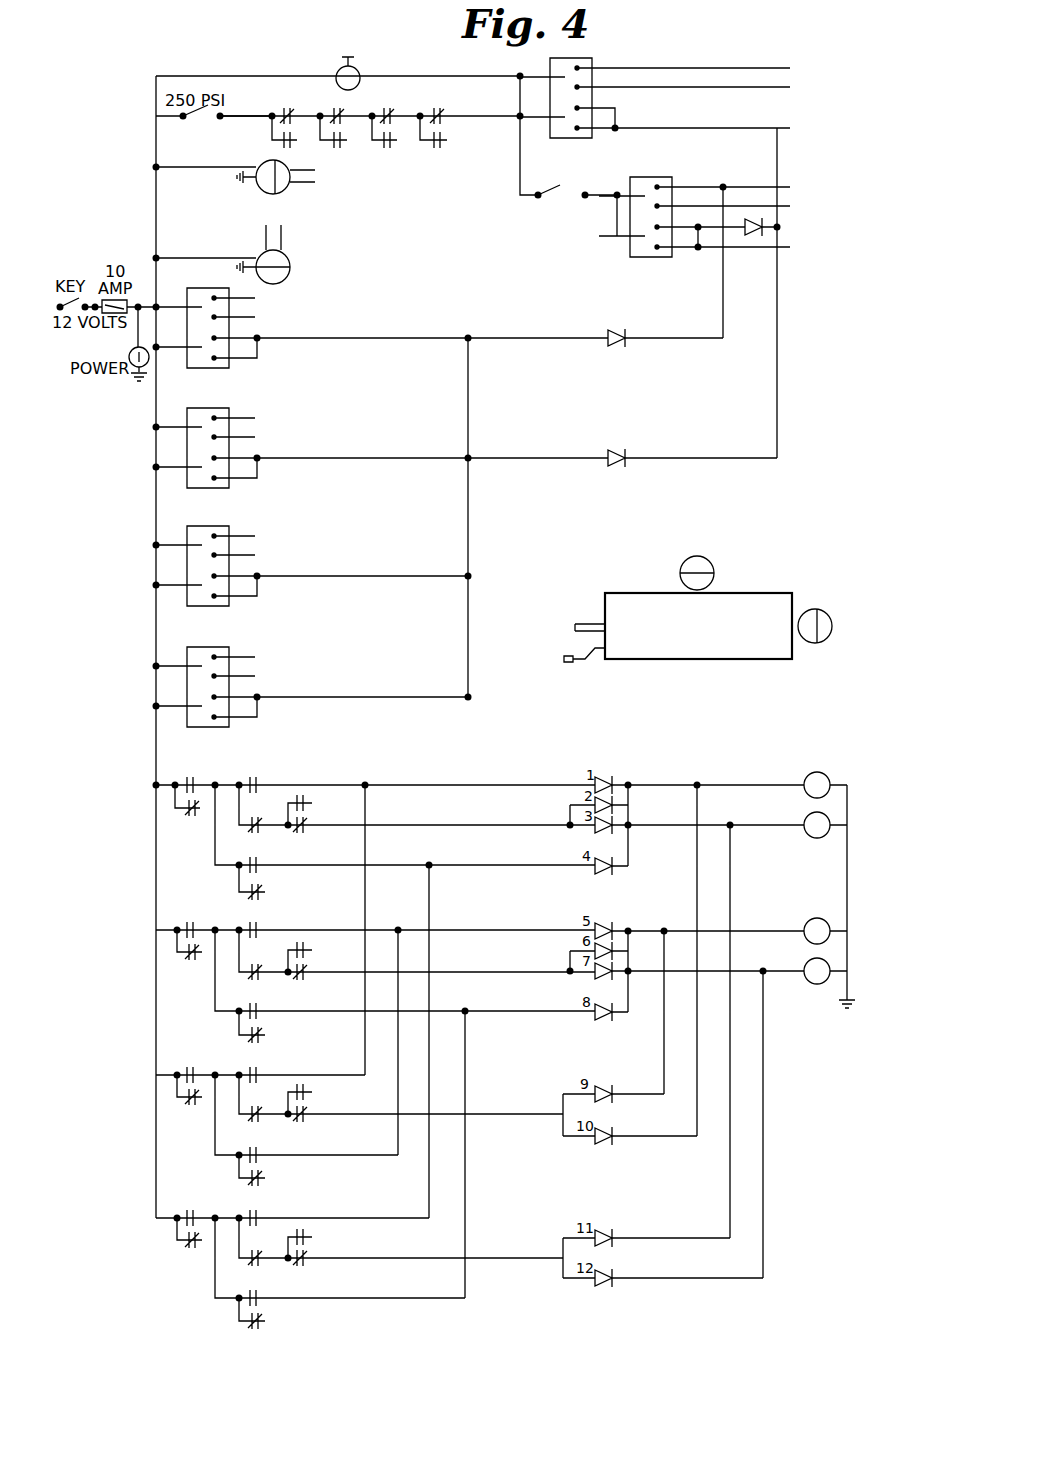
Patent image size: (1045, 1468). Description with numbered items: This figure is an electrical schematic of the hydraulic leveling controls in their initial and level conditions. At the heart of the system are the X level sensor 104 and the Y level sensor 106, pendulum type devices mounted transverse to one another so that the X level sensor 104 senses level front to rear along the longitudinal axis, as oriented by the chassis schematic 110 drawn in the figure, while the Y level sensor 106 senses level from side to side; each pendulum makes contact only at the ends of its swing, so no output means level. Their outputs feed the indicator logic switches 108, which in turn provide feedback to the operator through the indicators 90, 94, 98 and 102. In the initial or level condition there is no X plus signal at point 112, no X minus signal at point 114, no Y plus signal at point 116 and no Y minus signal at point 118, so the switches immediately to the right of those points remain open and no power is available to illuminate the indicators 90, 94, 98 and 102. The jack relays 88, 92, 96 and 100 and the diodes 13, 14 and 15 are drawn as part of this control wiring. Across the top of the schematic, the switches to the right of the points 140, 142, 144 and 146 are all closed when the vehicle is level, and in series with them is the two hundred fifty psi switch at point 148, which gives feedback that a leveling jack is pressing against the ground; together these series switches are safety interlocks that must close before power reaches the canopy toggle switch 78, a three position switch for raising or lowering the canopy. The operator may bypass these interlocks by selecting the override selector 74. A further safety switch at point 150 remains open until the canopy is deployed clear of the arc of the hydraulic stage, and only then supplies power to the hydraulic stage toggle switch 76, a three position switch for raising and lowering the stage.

The override selector 74 is at (338, 74).
The hydraulic stage toggle switch 76 is at (754, 236).
The canopy toggle switch 78 is at (578, 138).
The jack 1 relay 88 is at (218, 368).
The jack 2 relay 92 is at (218, 488).
The jack 3 relay 96 is at (218, 607).
The jack 4 relay 100 is at (218, 728).
The indicator 90 is at (827, 941).
The indicator 94 is at (827, 796).
The indicator 98 is at (827, 836).
The indicator 102 is at (815, 985).
The X level sensor 104 is at (290, 262).
The Y level sensor 106 is at (288, 188).
The indicator logic switches 108 is at (338, 1047).
The chassis schematic 110 is at (686, 659).
The X plus signal point 112 is at (156, 784).
The X minus signal point 114 is at (158, 928).
The Y plus signal point 116 is at (175, 1075).
The Y minus signal point 118 is at (342, 1254).
The safety interlock switch point 140 is at (255, 110).
The safety interlock switch point 142 is at (335, 118).
The safety interlock switch point 144 is at (385, 118).
The safety interlock switch point 146 is at (435, 118).
The 250 psi switch point 148 is at (156, 117).
The safety switch point 150 is at (537, 205).
The diode 13 is at (622, 297).
The diode 14 is at (744, 220).
The diode 15 is at (595, 267).